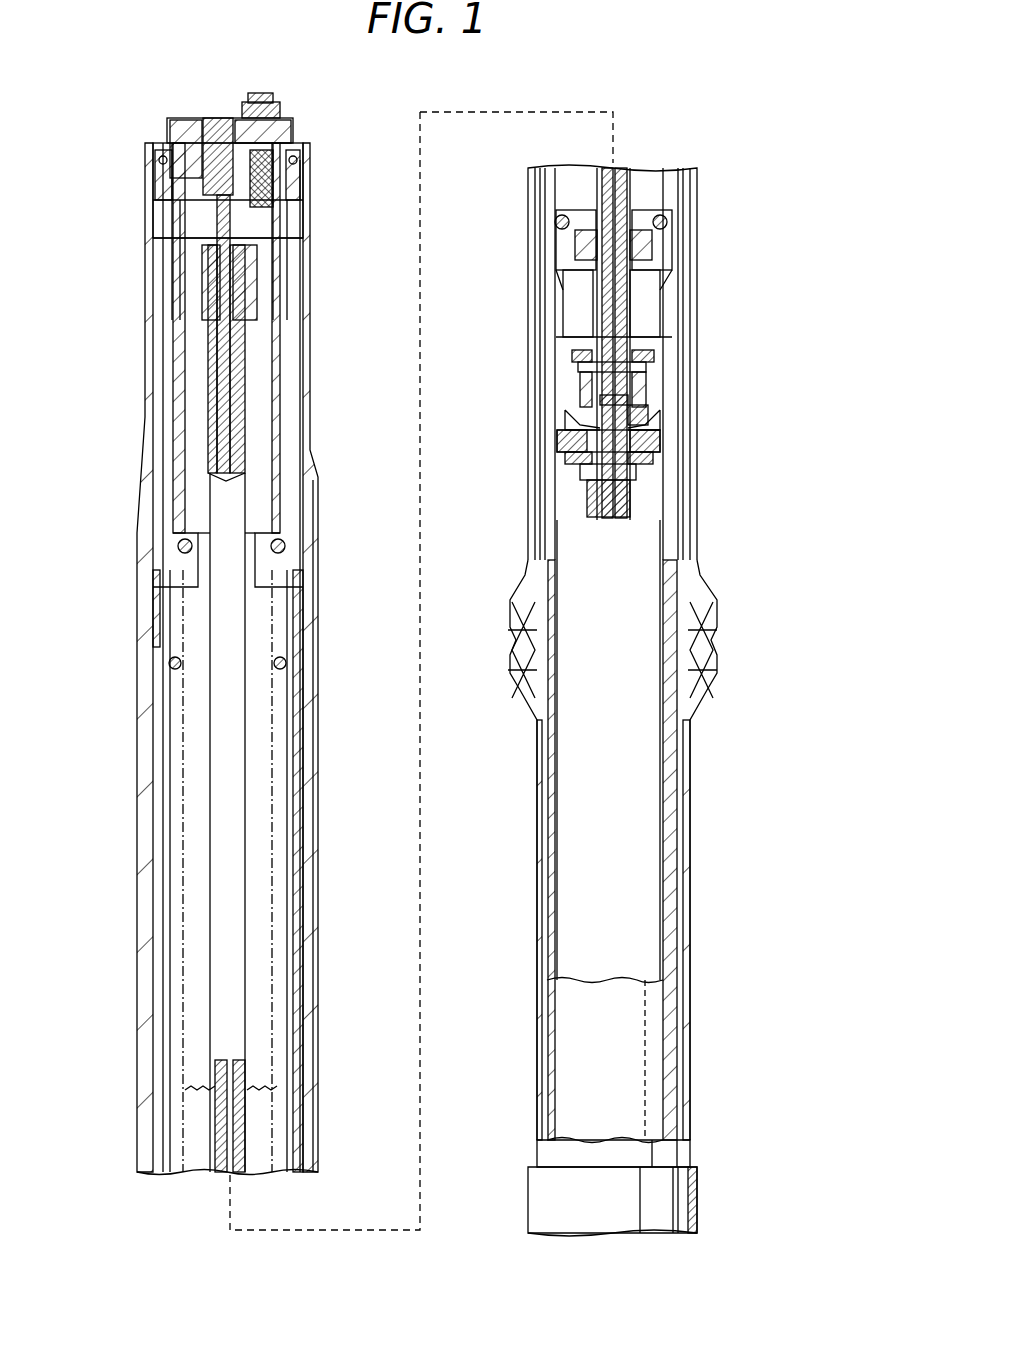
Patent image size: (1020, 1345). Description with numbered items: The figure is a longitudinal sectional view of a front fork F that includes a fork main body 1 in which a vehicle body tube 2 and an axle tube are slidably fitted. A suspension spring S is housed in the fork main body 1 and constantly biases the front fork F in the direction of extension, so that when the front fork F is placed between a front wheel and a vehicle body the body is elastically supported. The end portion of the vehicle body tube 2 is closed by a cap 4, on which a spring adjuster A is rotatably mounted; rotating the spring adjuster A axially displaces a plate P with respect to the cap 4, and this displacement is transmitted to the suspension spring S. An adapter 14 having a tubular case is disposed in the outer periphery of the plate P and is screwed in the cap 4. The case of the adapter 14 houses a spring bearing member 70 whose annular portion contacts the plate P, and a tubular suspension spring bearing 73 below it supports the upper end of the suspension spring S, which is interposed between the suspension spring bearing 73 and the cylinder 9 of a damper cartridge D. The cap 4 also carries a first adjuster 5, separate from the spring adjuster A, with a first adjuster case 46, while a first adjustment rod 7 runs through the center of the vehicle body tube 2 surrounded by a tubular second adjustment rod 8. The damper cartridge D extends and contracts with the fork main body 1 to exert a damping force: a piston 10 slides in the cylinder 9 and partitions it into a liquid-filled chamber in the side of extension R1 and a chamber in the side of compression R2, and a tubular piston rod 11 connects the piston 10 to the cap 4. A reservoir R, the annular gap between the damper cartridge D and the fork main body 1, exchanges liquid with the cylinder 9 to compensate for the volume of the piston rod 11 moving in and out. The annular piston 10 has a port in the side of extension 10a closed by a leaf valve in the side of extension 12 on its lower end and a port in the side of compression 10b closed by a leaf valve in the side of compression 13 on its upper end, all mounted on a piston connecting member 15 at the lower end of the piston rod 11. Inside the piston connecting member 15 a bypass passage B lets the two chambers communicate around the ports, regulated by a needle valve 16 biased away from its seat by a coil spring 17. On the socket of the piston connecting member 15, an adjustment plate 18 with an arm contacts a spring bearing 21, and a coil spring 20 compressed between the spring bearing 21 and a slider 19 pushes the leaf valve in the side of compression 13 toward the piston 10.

The fork main body 1 is at (137, 718).
The vehicle body tube 2 is at (314, 342).
The cap 4 is at (185, 128).
The first adjuster 5 is at (226, 122).
The first adjustment rod 7 is at (222, 390).
The second adjustment rod 8 is at (240, 410).
The cylinder 9 is at (672, 854).
The piston 10 is at (658, 460).
The port in the side of extension 10a is at (653, 461).
The port in the side of compression 10b is at (577, 450).
The piston rod 11 is at (628, 181).
The leaf valve in the side of extension 12 is at (678, 492).
The leaf valve in the side of compression 13 is at (572, 440).
The adapter 14 is at (300, 225).
The piston connecting member 15 is at (642, 389).
The needle valve 16 is at (574, 398).
The coil spring 17 is at (574, 422).
The adjustment plate 18 is at (654, 354).
The slider 19 is at (650, 441).
The coil spring 20 is at (640, 411).
The spring bearing 21 is at (646, 366).
The first adjuster case 46 is at (154, 180).
The spring bearing member 70 is at (303, 175).
The suspension spring bearing 73 is at (154, 318).
The spring adjuster A is at (282, 108).
The bypass passage B is at (578, 482).
The damper cartridge D is at (545, 767).
The front fork F is at (143, 143).
The plate P is at (296, 156).
The reservoir R is at (257, 848).
The chamber in the side of extension R1 is at (572, 340).
The chamber in the side of compression R2 is at (575, 856).
The suspension spring S is at (283, 550).